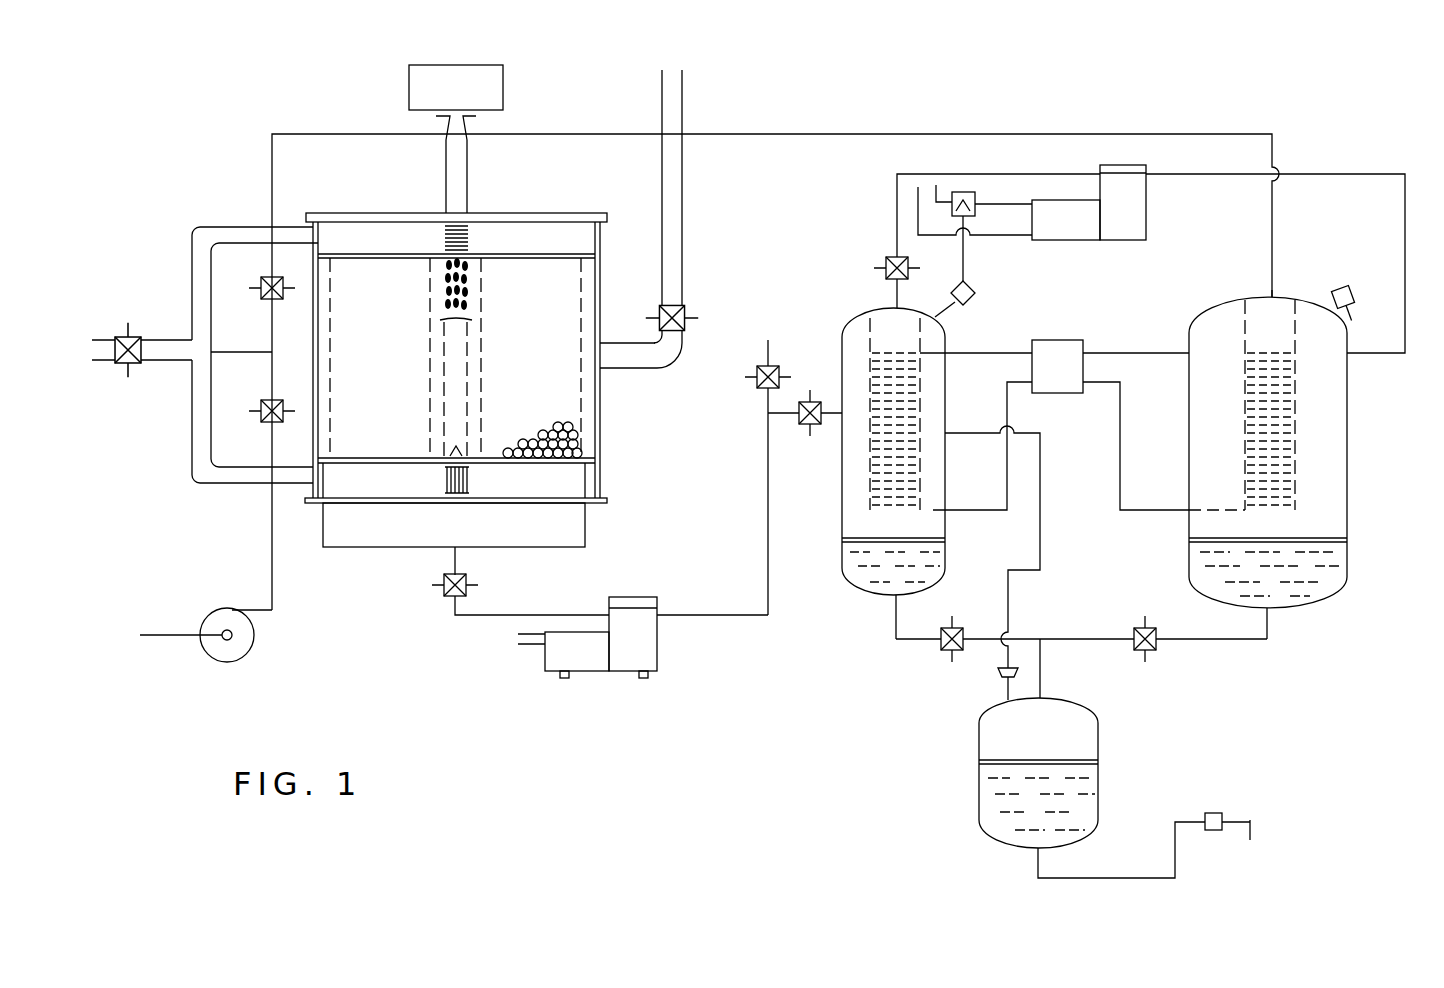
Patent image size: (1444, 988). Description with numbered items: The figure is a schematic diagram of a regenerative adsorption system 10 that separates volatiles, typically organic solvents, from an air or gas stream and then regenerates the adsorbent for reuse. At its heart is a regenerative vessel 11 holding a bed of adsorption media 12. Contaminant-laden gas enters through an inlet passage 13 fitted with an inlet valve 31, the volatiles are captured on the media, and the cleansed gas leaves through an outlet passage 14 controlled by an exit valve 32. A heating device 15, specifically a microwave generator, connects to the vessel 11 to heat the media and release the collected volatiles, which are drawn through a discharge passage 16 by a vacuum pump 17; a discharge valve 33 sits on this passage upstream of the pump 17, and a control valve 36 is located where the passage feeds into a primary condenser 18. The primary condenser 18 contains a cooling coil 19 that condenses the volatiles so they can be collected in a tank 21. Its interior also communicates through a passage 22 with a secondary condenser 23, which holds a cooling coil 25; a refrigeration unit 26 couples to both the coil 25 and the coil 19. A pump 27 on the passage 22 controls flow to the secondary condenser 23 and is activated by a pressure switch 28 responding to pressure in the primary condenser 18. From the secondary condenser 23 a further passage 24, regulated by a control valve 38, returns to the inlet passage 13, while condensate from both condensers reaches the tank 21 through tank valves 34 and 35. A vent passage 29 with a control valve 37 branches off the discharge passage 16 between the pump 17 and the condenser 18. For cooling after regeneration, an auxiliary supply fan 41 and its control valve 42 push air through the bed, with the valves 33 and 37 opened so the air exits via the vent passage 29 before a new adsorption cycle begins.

The regenerative adsorption system 10 is at (683, 722).
The regenerative vessel 11 is at (600, 415).
The adsorption media 12 is at (583, 450).
The inlet passage 13 is at (116, 337).
The outlet passage 14 is at (683, 196).
The heating device 15 is at (409, 85).
The discharge passage 16 is at (455, 620).
The vacuum pump 17 is at (657, 660).
The primary condenser 18 is at (842, 342).
The cooling coil 19 is at (870, 497).
The tank 21 is at (985, 741).
The passage 22 is at (973, 175).
The secondary condenser 23 is at (1340, 408).
The further passage 24 is at (775, 134).
The cooling coil 25 is at (1290, 479).
The refrigeration unit 26 is at (1065, 395).
The pump 27 is at (1145, 172).
The pressure switch 28 is at (952, 192).
The vent passage 29 is at (766, 346).
The inlet valve 31 is at (130, 366).
The exit valve 32 is at (686, 306).
The discharge valve 33 is at (440, 592).
The tank valve 34 is at (940, 650).
The tank valve 35 is at (1158, 650).
The control valve 36 is at (810, 426).
The control valve 37 is at (757, 378).
The control valve 38 is at (268, 280).
The auxiliary supply fan 41 is at (243, 652).
The control valve 42 is at (268, 418).